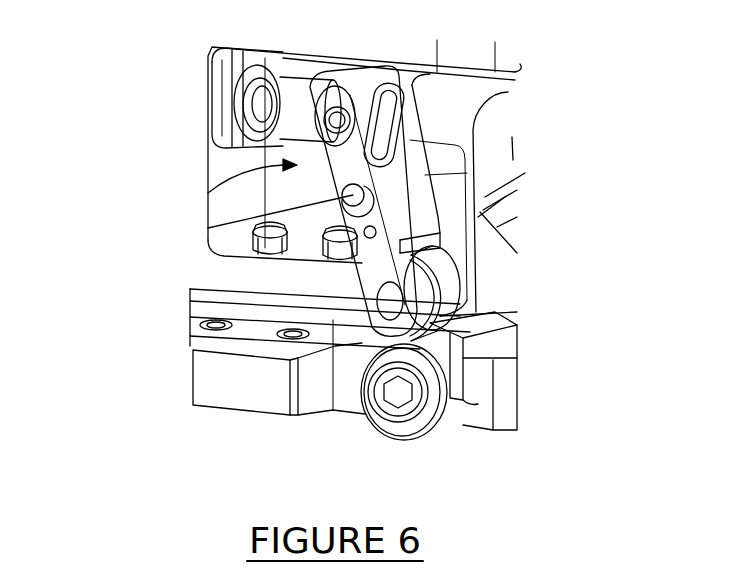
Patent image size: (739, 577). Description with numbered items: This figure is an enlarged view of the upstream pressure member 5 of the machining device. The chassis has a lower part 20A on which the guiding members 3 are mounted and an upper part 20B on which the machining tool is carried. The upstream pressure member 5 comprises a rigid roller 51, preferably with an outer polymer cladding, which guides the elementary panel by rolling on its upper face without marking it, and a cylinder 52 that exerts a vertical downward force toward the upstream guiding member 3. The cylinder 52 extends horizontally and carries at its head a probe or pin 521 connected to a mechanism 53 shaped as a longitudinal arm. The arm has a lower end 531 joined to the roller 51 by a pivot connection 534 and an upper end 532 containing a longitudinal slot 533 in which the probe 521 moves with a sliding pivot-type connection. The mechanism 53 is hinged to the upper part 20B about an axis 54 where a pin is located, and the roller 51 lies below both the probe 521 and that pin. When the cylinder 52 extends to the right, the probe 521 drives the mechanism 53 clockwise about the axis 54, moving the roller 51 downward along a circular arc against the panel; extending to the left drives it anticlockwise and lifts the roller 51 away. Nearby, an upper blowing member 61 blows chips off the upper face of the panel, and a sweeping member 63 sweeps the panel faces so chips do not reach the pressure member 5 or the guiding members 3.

The guiding member 3 is at (446, 418).
The upstream pressure member 5 is at (208, 193).
The lower part 20A is at (340, 393).
The upper part 20B is at (218, 160).
The roller 51 is at (450, 283).
The cylinder 52 is at (267, 100).
The mechanism 53 is at (402, 208).
The axis 54 is at (255, 253).
The upper blowing member 61 is at (506, 153).
The sweeping member 63 is at (484, 388).
The probe 521 is at (340, 117).
The lower end 531 is at (375, 300).
The upper end 532 is at (400, 78).
The longitudinal slot 533 is at (333, 100).
The pivot connection 534 is at (395, 298).